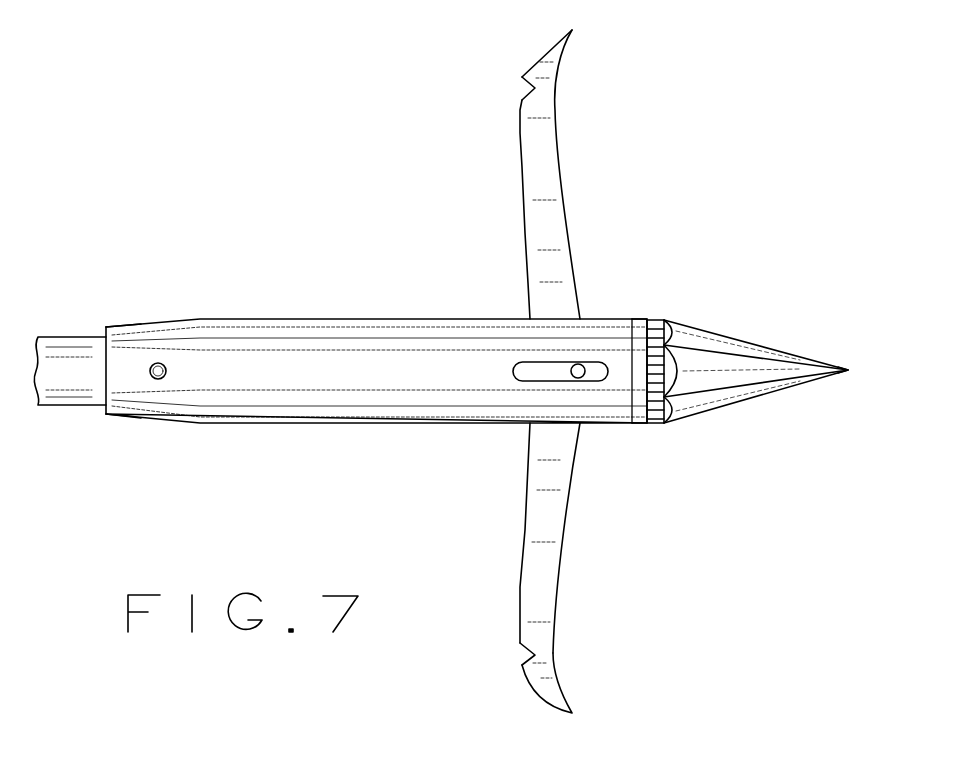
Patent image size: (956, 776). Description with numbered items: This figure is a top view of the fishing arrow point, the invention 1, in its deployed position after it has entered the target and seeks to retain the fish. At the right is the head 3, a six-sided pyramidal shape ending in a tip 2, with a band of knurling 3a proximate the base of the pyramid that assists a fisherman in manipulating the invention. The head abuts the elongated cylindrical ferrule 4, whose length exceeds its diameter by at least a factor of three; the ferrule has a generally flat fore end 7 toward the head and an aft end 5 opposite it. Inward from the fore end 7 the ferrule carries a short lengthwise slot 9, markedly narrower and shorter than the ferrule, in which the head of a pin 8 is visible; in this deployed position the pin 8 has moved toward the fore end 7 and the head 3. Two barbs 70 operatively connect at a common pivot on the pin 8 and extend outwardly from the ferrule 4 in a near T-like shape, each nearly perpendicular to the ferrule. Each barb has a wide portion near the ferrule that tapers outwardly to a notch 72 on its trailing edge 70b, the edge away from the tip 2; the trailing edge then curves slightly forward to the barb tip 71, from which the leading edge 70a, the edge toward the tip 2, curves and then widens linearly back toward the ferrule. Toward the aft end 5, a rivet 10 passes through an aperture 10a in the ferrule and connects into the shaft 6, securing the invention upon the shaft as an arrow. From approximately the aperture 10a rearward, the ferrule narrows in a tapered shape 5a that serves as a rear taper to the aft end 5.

The throwing device 1 is at (310, 224).
The tip 2 is at (848, 370).
The head 3 is at (748, 342).
The band of knurling 3a is at (657, 320).
The ferrule 4 is at (355, 335).
The aft end 5 is at (106, 414).
The tapered shape 5a is at (141, 322).
The shaft 6 is at (72, 337).
The fore end 7 is at (603, 423).
The pin 8 is at (580, 365).
The slot 9 is at (597, 363).
The rivet 10 is at (160, 364).
The aperture 10a is at (168, 373).
The barbs 70 is at (562, 143).
The leading edge 70a is at (566, 188).
The trailing edge 70b is at (519, 198).
The barb tip 71 is at (574, 31).
The notch 72 is at (533, 89).